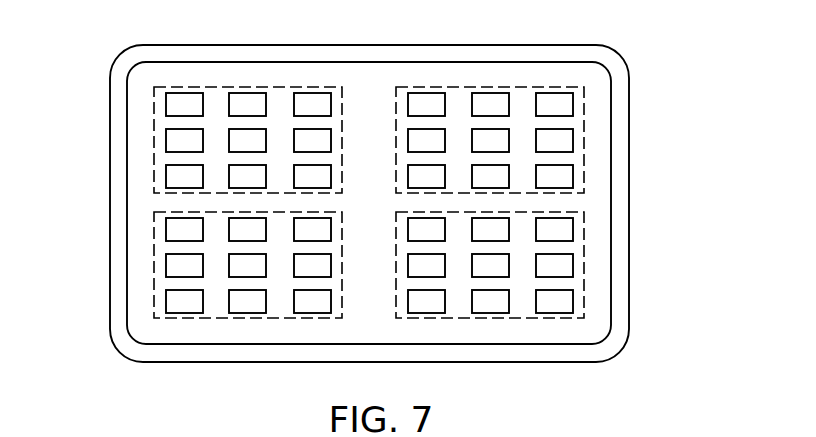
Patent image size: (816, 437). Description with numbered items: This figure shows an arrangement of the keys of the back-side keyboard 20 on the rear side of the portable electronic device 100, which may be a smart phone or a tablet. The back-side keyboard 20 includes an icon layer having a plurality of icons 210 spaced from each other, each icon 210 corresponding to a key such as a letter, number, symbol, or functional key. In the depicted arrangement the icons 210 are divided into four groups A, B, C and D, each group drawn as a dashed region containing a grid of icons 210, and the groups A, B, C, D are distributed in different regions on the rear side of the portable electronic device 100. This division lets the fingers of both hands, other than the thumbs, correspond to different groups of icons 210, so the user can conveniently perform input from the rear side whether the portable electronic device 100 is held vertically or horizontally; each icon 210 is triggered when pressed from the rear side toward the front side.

The portable electronic device 100 is at (358, 32).
The back-side keyboard 20 is at (597, 108).
The icons 210 is at (166, 96).
The group A of icons A is at (154, 140).
The group B of icons B is at (584, 140).
The group C of icons C is at (154, 255).
The group D of icons D is at (584, 244).